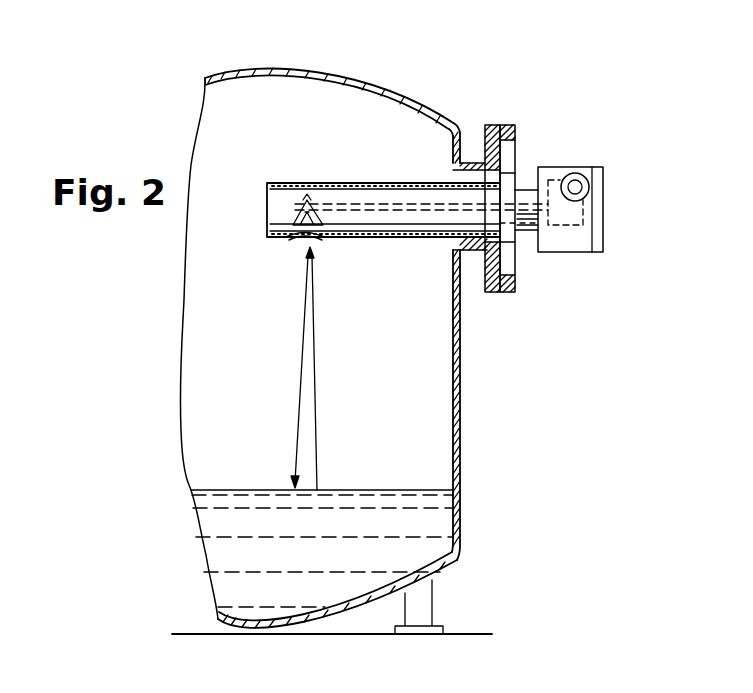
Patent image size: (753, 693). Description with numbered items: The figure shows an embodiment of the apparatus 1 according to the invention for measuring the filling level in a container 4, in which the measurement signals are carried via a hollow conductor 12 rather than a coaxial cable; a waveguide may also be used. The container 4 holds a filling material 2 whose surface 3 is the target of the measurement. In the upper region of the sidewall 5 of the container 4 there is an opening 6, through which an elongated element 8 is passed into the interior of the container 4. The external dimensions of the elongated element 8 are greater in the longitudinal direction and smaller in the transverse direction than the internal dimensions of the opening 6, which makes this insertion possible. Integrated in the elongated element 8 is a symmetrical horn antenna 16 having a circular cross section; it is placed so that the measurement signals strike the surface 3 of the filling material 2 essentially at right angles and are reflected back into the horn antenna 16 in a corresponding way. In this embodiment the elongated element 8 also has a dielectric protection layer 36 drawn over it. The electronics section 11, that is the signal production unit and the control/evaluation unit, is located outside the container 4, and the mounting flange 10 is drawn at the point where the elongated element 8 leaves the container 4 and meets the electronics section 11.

The apparatus 1 is at (480, 100).
The filling material 2 is at (435, 527).
The surface 3 is at (398, 490).
The container 4 is at (360, 362).
The sidewall 5 is at (460, 380).
The opening 6 is at (475, 242).
The elongated element 8 is at (353, 208).
The sensor flange 10 is at (505, 157).
The electronics section 11 is at (570, 218).
The hollow conductor 12 is at (343, 197).
The horn antenna 16 is at (295, 243).
The dielectric protection layer 36 is at (305, 182).